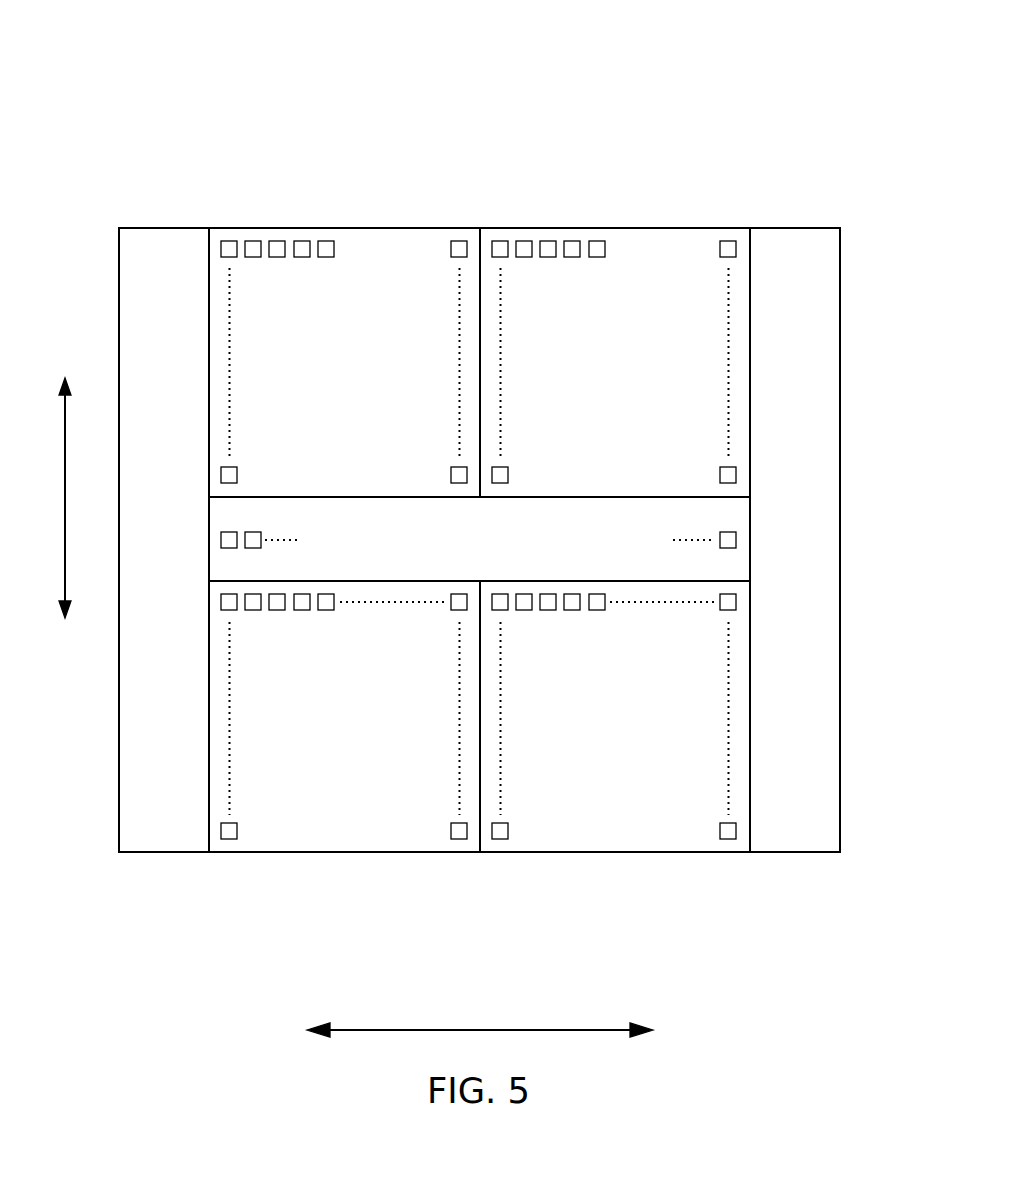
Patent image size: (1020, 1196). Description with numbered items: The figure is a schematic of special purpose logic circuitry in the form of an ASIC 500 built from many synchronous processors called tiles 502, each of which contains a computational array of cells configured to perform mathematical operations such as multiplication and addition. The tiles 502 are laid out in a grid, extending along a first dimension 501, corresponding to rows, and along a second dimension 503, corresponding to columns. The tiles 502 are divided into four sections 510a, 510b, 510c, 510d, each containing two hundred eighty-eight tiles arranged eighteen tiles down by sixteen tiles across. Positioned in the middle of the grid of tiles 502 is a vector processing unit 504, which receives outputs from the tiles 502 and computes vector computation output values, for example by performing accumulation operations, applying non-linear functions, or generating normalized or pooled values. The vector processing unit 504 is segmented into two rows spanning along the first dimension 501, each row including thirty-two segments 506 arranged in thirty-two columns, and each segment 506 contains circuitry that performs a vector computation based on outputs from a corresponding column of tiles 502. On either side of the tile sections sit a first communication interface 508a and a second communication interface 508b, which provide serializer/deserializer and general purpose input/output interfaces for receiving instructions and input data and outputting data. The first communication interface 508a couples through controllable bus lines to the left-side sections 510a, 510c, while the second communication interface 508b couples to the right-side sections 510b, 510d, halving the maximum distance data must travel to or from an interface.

The ASIC 500 is at (142, 46).
The first dimension 501 is at (480, 1030).
The tile 502 is at (228, 240).
The second dimension 503 is at (63, 500).
The vector processing unit 504 is at (722, 510).
The segment 506 is at (740, 540).
The first communication interface 508a is at (157, 240).
The second communication interface 508b is at (797, 240).
The tile section 510a is at (354, 185).
The tile section 510b is at (632, 185).
The tile section 510c is at (336, 866).
The tile section 510d is at (634, 868).